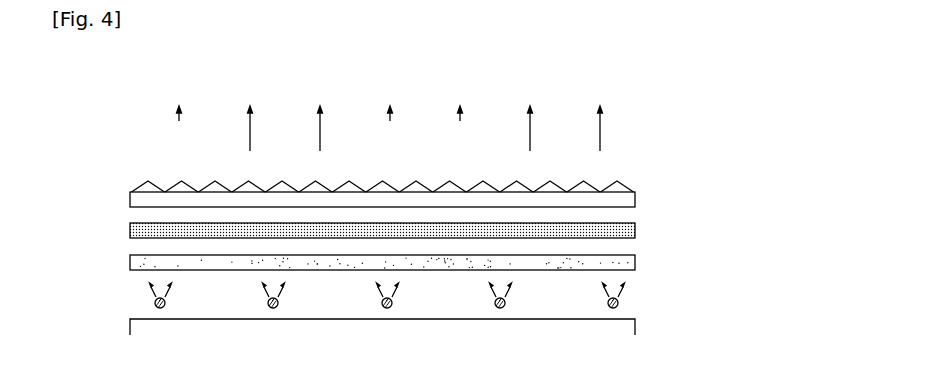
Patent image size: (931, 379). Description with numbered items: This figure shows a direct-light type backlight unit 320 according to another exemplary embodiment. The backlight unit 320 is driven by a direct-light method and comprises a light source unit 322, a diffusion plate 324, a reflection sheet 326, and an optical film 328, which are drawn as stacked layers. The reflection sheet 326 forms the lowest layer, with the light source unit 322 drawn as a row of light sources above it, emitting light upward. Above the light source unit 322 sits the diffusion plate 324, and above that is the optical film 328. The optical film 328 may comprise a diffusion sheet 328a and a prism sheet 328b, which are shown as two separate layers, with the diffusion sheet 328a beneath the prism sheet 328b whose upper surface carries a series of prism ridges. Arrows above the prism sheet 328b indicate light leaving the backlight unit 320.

The backlight unit 320 is at (600, 82).
The light source unit 322 is at (618, 301).
The diffusion plate 324 is at (635, 265).
The reflection sheet 326 is at (628, 327).
The optical film 328 is at (764, 198).
The diffusion sheet 328a is at (635, 231).
The prism sheet 328b is at (635, 201).